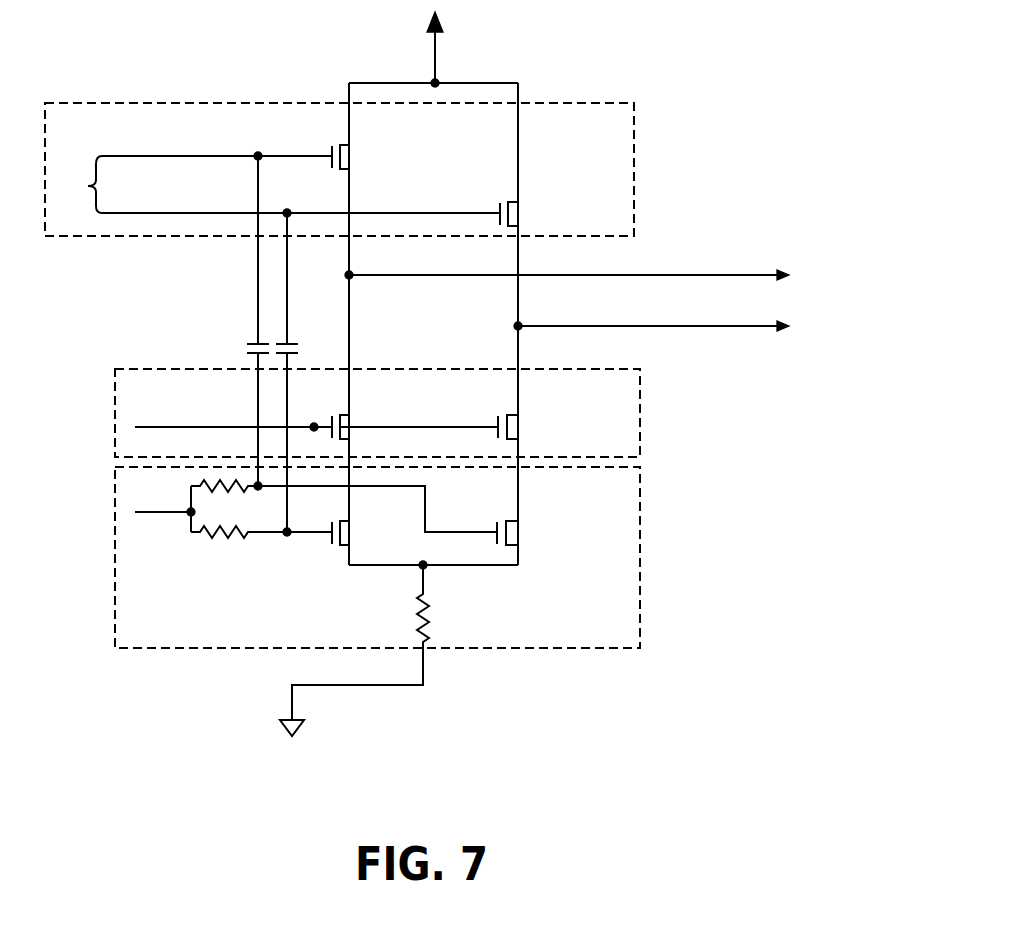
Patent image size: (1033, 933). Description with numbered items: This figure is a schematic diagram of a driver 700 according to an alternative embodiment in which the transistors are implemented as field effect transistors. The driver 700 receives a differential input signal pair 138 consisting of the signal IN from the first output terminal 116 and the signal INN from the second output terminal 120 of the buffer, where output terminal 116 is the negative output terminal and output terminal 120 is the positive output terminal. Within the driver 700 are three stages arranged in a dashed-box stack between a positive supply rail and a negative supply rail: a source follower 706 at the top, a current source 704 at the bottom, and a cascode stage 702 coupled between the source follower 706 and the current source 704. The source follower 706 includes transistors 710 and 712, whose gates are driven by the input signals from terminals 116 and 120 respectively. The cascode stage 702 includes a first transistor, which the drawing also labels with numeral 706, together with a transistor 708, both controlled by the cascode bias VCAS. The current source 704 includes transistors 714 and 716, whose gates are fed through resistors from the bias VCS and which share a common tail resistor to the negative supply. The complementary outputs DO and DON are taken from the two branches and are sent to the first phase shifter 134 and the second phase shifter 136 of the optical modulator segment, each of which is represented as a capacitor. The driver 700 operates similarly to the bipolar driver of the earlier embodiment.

The driver 700 is at (735, 687).
The first output terminal 116 is at (187, 154).
The second output terminal 120 is at (187, 212).
The differential input signal pair 138 is at (101, 171).
The source follower 706 is at (634, 155).
The transistor 710 is at (351, 158).
The transistor 712 is at (520, 214).
The cascode stage 702 is at (641, 400).
The transistor 708 is at (520, 421).
The current source 704 is at (641, 518).
The transistor 714 is at (351, 535).
The transistor 716 is at (520, 535).
The first phase shifter 134 is at (829, 276).
The second phase shifter 136 is at (829, 327).